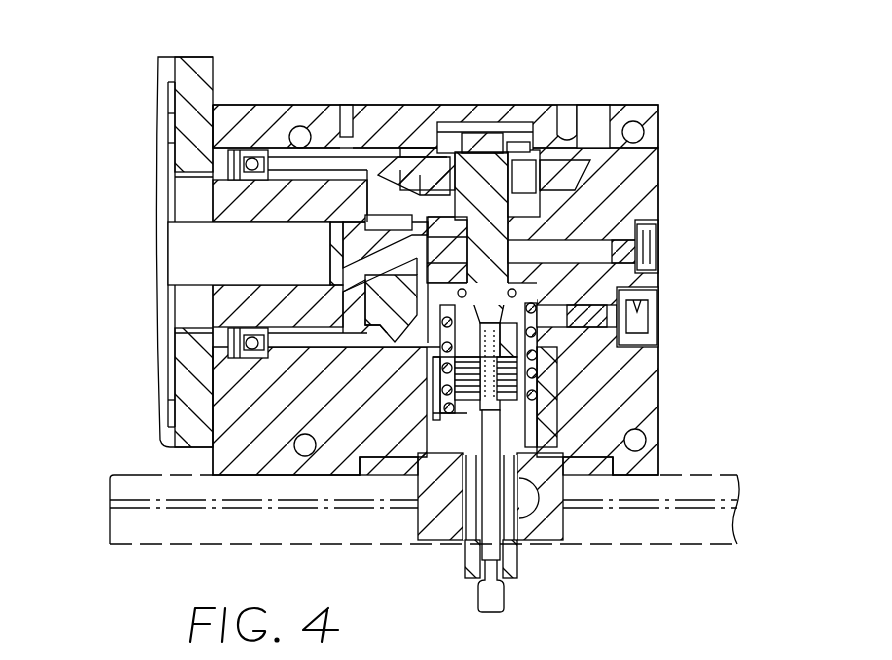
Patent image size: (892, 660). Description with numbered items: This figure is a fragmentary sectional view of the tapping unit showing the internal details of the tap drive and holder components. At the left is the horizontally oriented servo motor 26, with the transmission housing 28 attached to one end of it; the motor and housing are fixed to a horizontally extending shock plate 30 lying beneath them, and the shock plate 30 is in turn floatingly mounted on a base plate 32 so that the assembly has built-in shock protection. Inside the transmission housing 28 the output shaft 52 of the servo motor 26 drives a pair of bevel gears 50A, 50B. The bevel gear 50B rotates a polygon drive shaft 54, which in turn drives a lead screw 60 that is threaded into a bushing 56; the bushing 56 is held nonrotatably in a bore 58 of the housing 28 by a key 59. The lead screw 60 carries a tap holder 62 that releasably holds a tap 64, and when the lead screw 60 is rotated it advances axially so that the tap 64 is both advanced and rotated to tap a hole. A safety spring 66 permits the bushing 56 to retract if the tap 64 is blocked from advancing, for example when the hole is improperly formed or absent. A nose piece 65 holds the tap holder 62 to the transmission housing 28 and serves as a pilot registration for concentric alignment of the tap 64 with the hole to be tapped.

The servo motor 26 is at (156, 71).
The transmission housing 28 is at (664, 157).
The shock plate 30 is at (112, 497).
The plate 32 is at (195, 528).
The bevel gear 50A is at (385, 197).
The bevel gear 50B is at (543, 168).
The output shaft 52 is at (175, 250).
The polygon drive shaft 54 is at (487, 203).
The bushing 56 is at (533, 427).
The bore 58 is at (540, 357).
The key 59 is at (535, 443).
The lead screw 60 is at (563, 500).
The tap holder 62 is at (460, 559).
The tap 64 is at (482, 600).
The nose piece 65 is at (418, 510).
The safety spring 66 is at (425, 358).